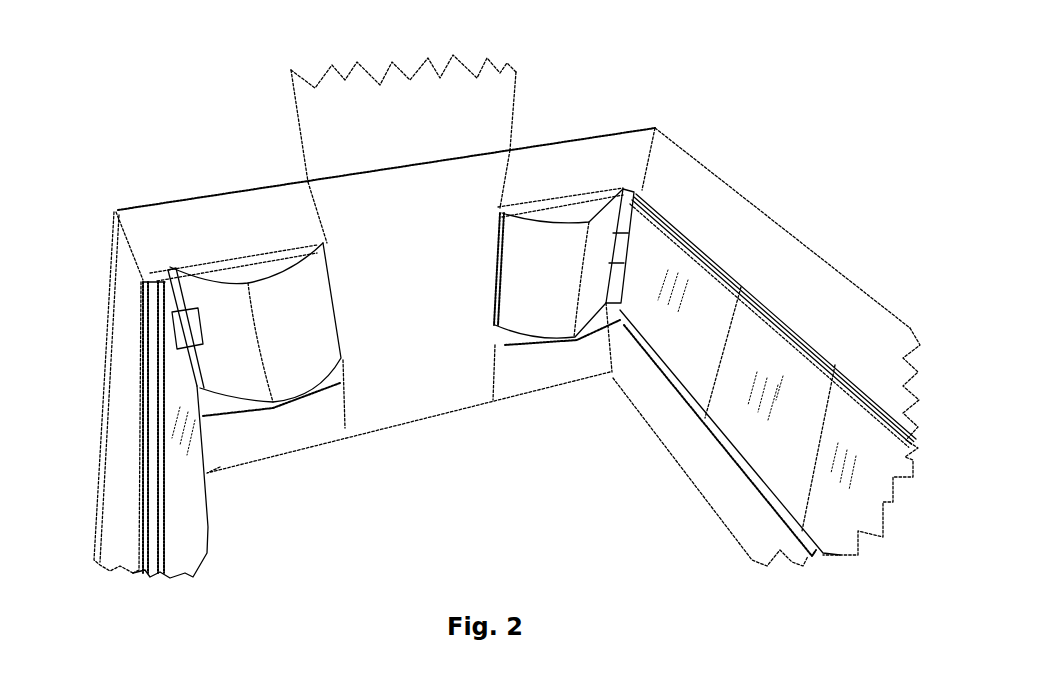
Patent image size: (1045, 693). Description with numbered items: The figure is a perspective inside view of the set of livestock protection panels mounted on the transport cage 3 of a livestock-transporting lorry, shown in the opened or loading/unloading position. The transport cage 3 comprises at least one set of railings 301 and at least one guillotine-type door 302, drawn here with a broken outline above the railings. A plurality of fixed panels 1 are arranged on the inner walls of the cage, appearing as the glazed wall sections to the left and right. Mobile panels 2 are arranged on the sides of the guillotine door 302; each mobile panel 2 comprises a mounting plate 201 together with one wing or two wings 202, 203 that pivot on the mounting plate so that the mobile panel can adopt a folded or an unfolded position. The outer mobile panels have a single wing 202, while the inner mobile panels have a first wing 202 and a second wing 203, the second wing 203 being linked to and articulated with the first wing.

The fixed panels 1 is at (205, 525).
The mobile panels 2 is at (338, 358).
The transport cage 3 is at (266, 140).
The mounting plate 201 is at (187, 330).
The first wing 202 is at (513, 257).
The second wing 203 is at (250, 281).
The set of railings 301 is at (573, 153).
The guillotine-type door 302 is at (477, 98).